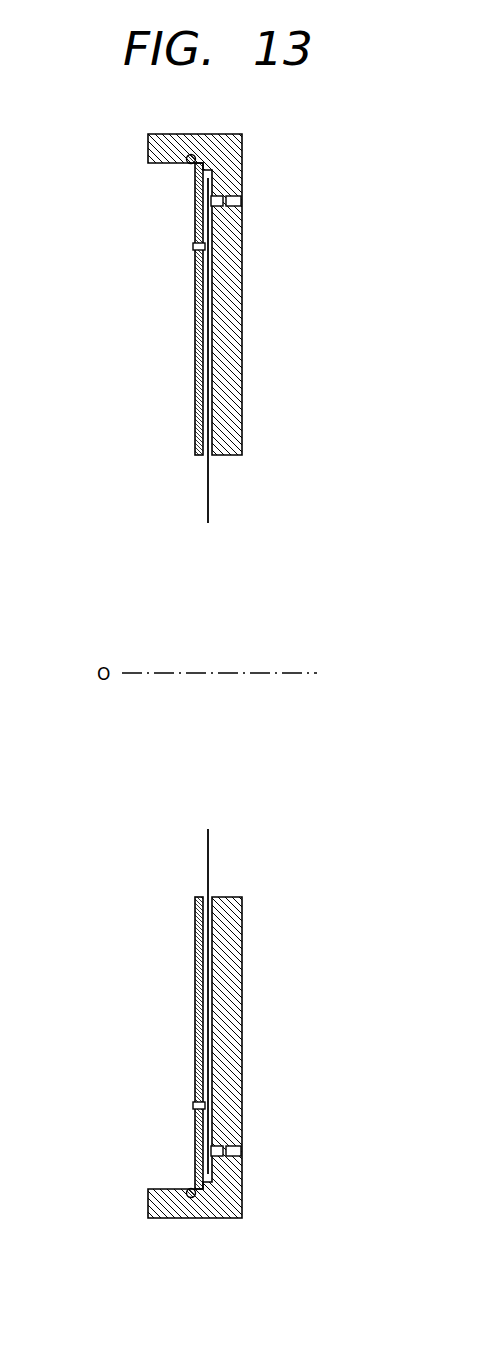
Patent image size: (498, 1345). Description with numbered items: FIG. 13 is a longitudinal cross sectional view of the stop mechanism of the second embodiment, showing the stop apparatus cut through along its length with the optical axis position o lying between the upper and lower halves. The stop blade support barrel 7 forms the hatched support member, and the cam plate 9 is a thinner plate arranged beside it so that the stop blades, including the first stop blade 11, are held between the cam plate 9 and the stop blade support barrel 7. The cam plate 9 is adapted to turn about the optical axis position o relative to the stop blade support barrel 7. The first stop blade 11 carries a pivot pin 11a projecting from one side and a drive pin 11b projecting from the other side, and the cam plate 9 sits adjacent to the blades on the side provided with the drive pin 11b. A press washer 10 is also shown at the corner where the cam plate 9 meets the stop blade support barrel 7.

The stop blade support barrel 7 is at (227, 312).
The cam plate 9 is at (195, 392).
The press washer 10 is at (190, 164).
The first stop blade 11 is at (127, 676).
The pivot pin 11a is at (215, 202).
The drive pin 11b is at (193, 247).